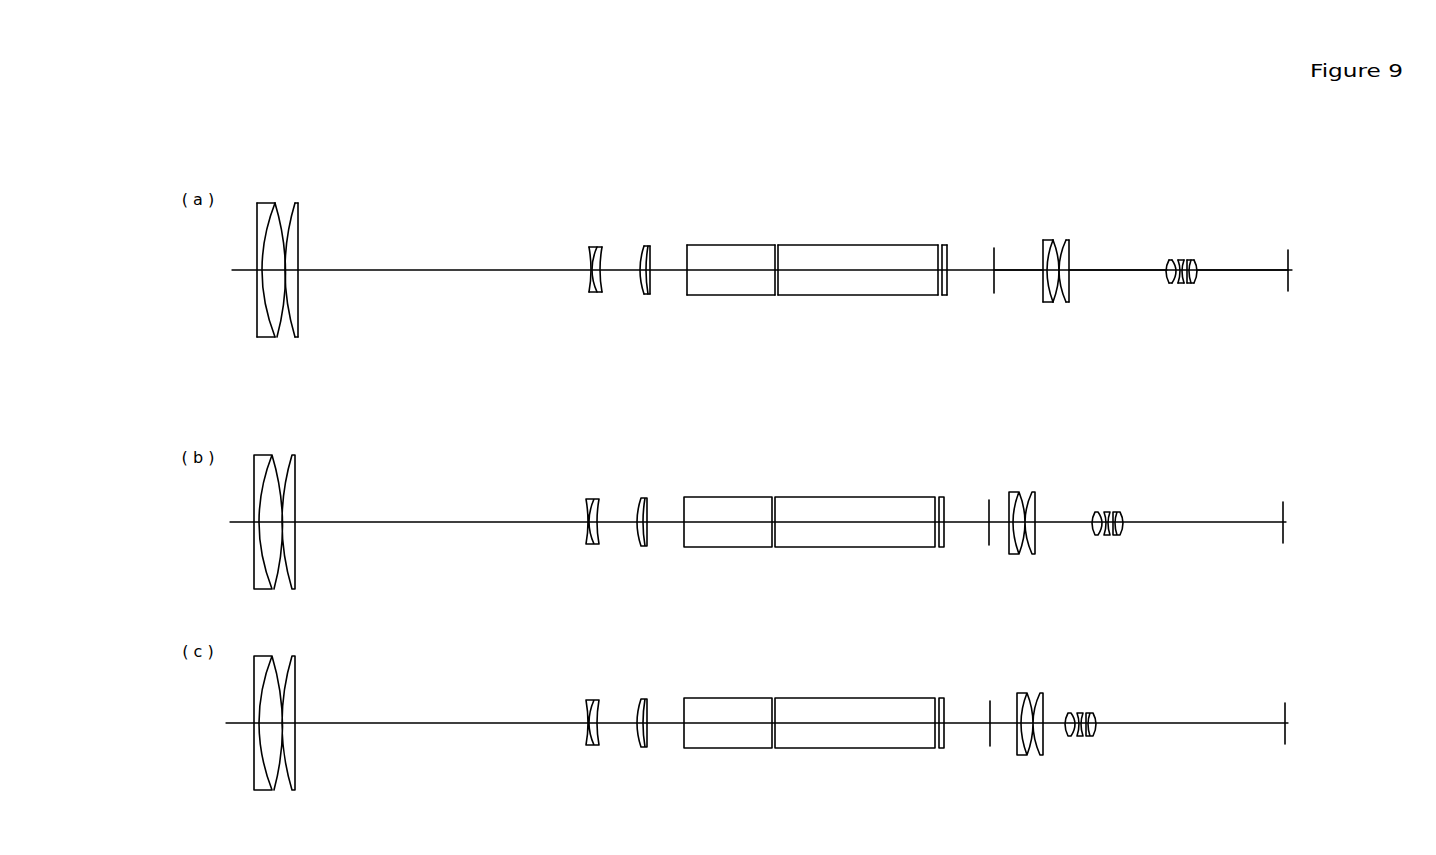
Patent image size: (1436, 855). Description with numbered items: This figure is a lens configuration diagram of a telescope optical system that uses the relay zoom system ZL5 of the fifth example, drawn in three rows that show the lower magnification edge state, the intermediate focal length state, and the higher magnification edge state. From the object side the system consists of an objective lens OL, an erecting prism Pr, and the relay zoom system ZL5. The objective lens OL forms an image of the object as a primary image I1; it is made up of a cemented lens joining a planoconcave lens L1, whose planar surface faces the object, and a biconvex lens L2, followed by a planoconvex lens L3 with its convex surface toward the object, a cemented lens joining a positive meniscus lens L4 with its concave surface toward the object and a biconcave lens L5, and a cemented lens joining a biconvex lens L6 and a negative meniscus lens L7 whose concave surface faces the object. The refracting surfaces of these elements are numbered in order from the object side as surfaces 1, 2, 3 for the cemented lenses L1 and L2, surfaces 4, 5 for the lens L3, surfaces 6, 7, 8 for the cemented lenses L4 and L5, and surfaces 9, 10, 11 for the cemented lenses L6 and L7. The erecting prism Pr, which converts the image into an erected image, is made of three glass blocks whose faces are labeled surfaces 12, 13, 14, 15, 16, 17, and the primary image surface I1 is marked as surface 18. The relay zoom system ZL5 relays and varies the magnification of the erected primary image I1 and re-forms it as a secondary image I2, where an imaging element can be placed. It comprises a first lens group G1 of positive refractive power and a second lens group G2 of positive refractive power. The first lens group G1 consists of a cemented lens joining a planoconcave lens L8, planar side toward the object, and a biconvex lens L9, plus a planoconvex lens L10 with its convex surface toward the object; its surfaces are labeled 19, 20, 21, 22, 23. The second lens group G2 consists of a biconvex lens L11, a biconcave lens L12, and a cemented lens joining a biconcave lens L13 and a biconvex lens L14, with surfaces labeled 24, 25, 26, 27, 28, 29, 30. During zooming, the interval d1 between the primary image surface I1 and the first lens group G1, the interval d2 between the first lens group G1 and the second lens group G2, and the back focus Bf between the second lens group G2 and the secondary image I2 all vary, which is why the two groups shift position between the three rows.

The first lens surface (L1 object side) 1 is at (257, 337).
The cemented surface L1/L2 2 is at (270, 337).
The L2 image-side surface 3 is at (276, 337).
The L3 object-side surface 4 is at (292, 337).
The L3 image-side surface 5 is at (298, 337).
The L4 object-side surface 6 is at (590, 292).
The cemented surface L4/L5 7 is at (596, 292).
The L5 image-side surface 8 is at (601, 292).
The L6 object-side surface 9 is at (642, 294).
The cemented surface L6/L7 10 is at (647, 294).
The L7 image-side surface 11 is at (650, 294).
The secondary image surface 12 is at (687, 290).
The prism first block exit surface 13 is at (775, 295).
The prism second block entrance surface 14 is at (777, 276).
The prism second block exit surface 15 is at (931, 292).
The plate entrance surface 16 is at (945, 295).
The plate exit surface 17 is at (948, 290).
The intermediate image plane surface 18 is at (994, 293).
The L8 object-side surface 19 is at (1043, 300).
The cemented surface L8/L9 20 is at (1050, 302).
The L9 image-side surface 21 is at (1054, 302).
The L10 object-side surface 22 is at (1062, 302).
The L10 image-side surface 23 is at (1087, 289).
The L11 object-side surface 24 is at (1168, 281).
The L11 image-side surface 25 is at (1172, 282).
The L12 object-side surface 26 is at (1180, 282).
The L12 image-side surface 27 is at (1186, 282).
The L13 object-side surface 28 is at (1189, 282).
The cemented surface L13/L14 29 is at (1192, 281).
The L14 image-side surface 30 is at (1195, 280).
The planoconcave lens L1 is at (257, 264).
The biconvex lens L2 is at (277, 264).
The planoconvex lens L3 is at (299, 264).
The positive meniscus lens L4 is at (584, 268).
The biconcave lens L5 is at (605, 268).
The biconvex lens L6 is at (643, 268).
The negative meniscus lens L7 is at (665, 268).
The planoconcave lens L8 is at (1031, 268).
The biconvex lens L9 is at (1063, 268).
The planoconvex lens L10 is at (1083, 259).
The biconvex lens L11 is at (1151, 266).
The biconcave lens L12 is at (1196, 266).
The biconcave lens L13 is at (1214, 263).
The biconvex lens L14 is at (1228, 263).
The objective lens OL is at (610, 297).
The erecting prism Pr is at (816, 338).
The primary image I1 is at (992, 260).
The secondary image I2 is at (1288, 250).
The interval between primary image surface and first lens group d1 is at (1016, 268).
The interval between first lens group and second lens group d2 is at (1104, 268).
The back focus Bf is at (1265, 268).
The first lens group G1 is at (1054, 491).
The second lens group G2 is at (1165, 491).
The relay zoom system ZL5 is at (1135, 510).